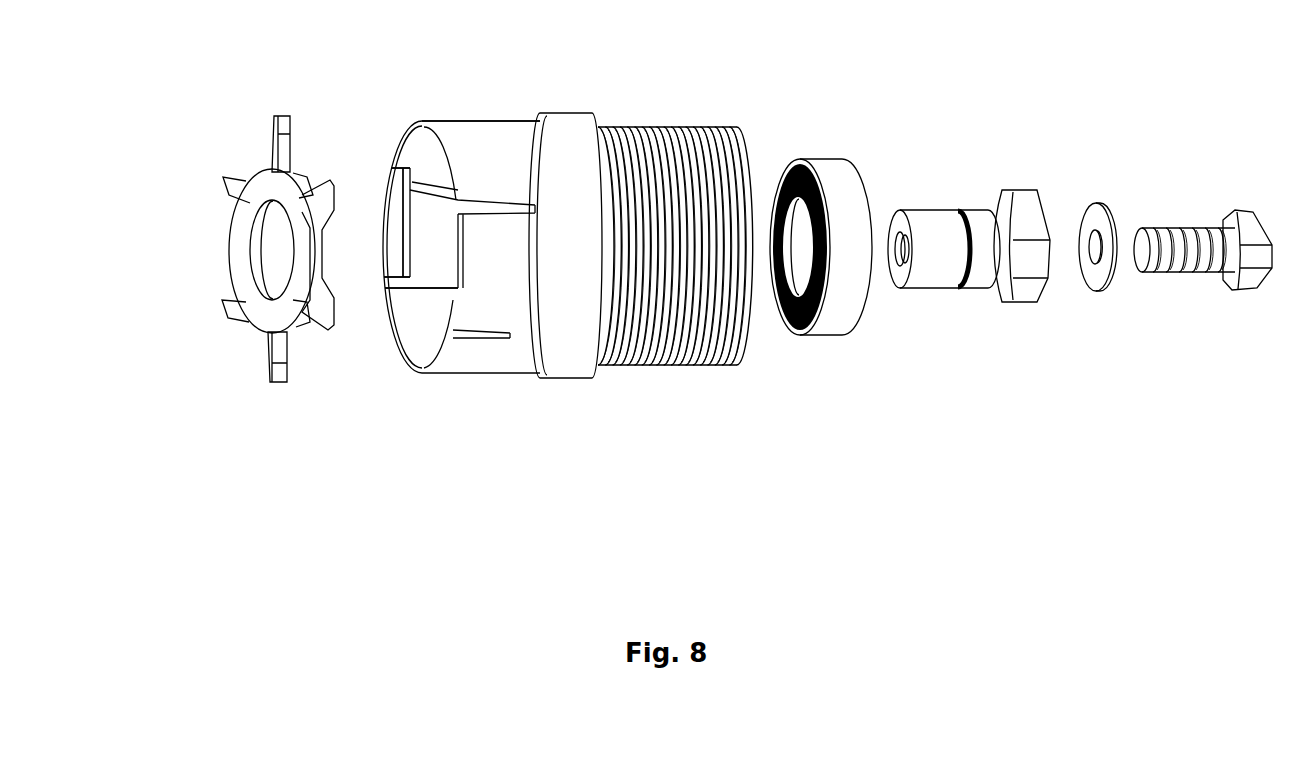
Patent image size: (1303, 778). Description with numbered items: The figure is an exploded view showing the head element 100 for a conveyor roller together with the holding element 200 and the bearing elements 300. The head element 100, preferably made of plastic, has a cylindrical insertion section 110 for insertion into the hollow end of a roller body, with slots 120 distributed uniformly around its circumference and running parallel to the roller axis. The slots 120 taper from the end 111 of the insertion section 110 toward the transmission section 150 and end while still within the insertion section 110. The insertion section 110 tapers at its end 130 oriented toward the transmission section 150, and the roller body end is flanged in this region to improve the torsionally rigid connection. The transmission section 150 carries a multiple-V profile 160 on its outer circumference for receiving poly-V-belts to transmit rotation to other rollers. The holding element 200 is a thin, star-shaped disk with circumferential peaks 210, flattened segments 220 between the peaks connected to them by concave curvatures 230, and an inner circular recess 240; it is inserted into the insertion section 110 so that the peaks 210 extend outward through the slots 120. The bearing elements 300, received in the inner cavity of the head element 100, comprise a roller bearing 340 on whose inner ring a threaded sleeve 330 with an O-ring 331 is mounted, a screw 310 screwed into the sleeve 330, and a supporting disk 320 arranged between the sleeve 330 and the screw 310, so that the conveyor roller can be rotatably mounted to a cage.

The head element 100 is at (520, 300).
The insertion section 110 is at (537, 103).
The end of the insertion section 111 is at (414, 122).
The slots 120 is at (358, 158).
The end of the insertion section 130 is at (530, 375).
The transmission section 150 is at (673, 284).
The multiple-V profile 160 is at (652, 365).
The holding element 200 is at (228, 318).
The circumferential peaks 210 is at (262, 366).
The flattened segments 220 is at (250, 330).
The concave curvatures 230 is at (237, 218).
The inner circular recess 240 is at (277, 243).
The bearing elements 300 is at (1020, 267).
The screw 310 is at (1205, 300).
The supporting disk 320 is at (1090, 288).
The sleeve 330 is at (966, 319).
The O-ring 331 is at (960, 295).
The roller bearing 340 is at (814, 358).